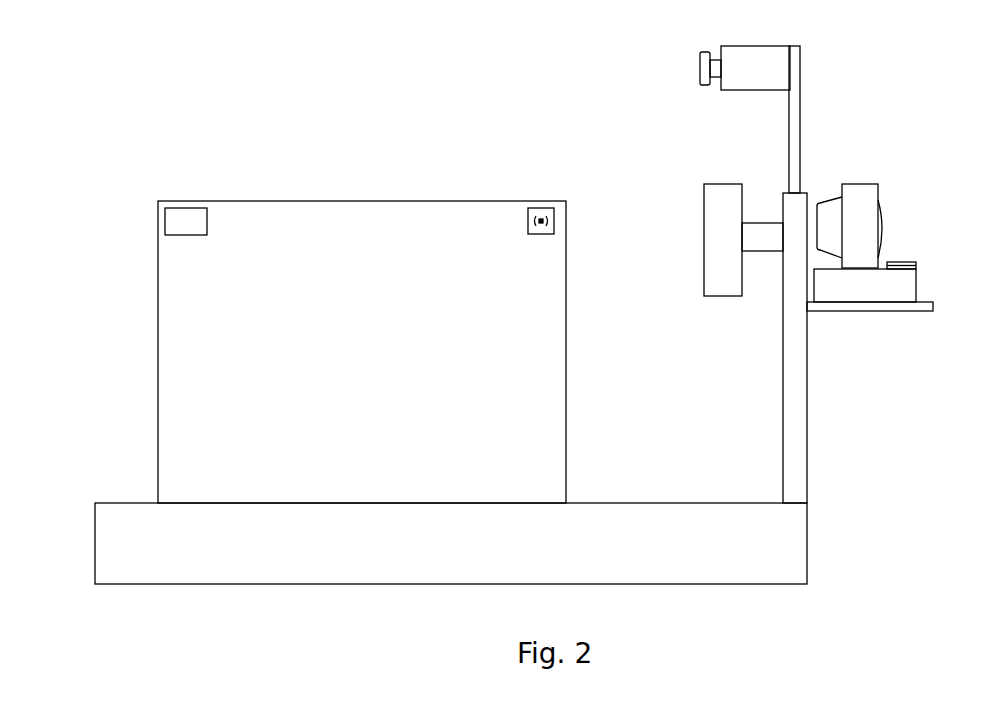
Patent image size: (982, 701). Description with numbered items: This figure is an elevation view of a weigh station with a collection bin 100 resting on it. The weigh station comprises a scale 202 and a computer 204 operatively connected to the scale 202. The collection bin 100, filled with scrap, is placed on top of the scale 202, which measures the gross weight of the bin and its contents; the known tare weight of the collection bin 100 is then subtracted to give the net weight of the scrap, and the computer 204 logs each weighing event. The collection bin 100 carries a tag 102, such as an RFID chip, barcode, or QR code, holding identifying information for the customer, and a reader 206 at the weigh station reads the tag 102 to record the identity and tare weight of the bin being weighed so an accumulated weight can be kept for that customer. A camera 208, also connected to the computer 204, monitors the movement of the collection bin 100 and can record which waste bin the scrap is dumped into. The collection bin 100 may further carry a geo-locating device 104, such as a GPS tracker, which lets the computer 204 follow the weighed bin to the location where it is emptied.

The collection bin 100 is at (158, 275).
The tag 102 is at (552, 207).
The geo-locating device 104 is at (175, 218).
The scale 202 is at (710, 569).
The computer 204 is at (863, 298).
The reader 206 is at (725, 288).
The camera 208 is at (783, 55).